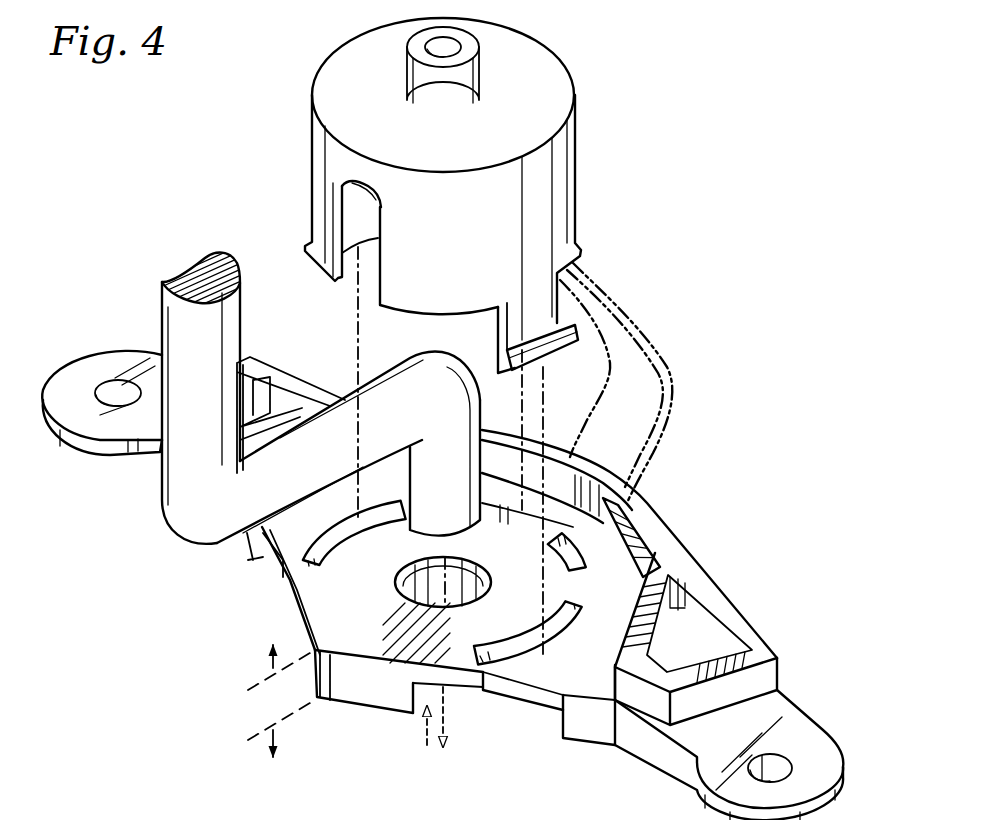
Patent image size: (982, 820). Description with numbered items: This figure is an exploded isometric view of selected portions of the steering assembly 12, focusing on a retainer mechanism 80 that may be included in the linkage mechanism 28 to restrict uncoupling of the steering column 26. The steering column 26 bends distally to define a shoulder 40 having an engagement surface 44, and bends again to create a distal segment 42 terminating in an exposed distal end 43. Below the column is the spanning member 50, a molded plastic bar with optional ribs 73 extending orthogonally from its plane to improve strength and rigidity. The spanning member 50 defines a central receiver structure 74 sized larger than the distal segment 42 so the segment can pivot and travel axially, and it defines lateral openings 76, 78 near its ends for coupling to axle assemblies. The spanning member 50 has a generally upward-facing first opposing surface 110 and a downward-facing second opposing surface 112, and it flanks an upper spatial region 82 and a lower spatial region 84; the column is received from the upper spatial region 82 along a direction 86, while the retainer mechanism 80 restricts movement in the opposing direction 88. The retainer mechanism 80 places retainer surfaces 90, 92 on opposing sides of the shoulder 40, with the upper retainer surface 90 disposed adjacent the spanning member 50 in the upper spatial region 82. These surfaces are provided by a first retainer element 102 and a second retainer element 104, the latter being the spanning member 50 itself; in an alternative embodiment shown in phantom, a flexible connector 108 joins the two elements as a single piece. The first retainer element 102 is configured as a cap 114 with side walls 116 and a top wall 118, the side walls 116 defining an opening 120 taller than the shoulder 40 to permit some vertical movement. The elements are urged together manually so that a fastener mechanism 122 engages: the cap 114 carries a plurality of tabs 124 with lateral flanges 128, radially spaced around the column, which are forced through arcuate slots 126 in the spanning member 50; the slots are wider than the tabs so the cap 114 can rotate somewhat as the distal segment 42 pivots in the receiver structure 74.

The steering assembly 12 is at (124, 223).
The steering column 26 is at (158, 325).
The linkage mechanism 28 is at (215, 575).
The shoulder 40 is at (345, 418).
The distal segment 42 is at (410, 503).
The distal end 43 is at (470, 538).
The engagement surface 44 is at (377, 424).
The spanning member 50 is at (283, 604).
The ribs 73 is at (378, 710).
The receiver structure 74 is at (475, 598).
The lateral opening 76 is at (784, 764).
The lateral opening 78 is at (105, 390).
The retainer mechanism 80 is at (280, 268).
The upper spatial region 82 is at (263, 662).
The lower spatial region 84 is at (282, 742).
The direction 86 is at (452, 707).
The opposing direction 88 is at (424, 728).
The upper retainer surface 90 is at (366, 192).
The retainer surface 92 is at (337, 626).
The first retainer element 102 is at (583, 189).
The second retainer element 104 is at (318, 611).
The flexible connector 108 is at (673, 418).
The first opposing surface 110 is at (558, 678).
The second opposing surface 112 is at (538, 706).
The cap 114 is at (580, 133).
The side walls 116 is at (310, 163).
The top wall 118 is at (513, 50).
The opening 120 is at (383, 260).
The fastener mechanism 122 is at (500, 389).
The tabs 124 is at (515, 330).
The arcuate slots 126 is at (580, 610).
The lateral flanges 128 is at (545, 342).